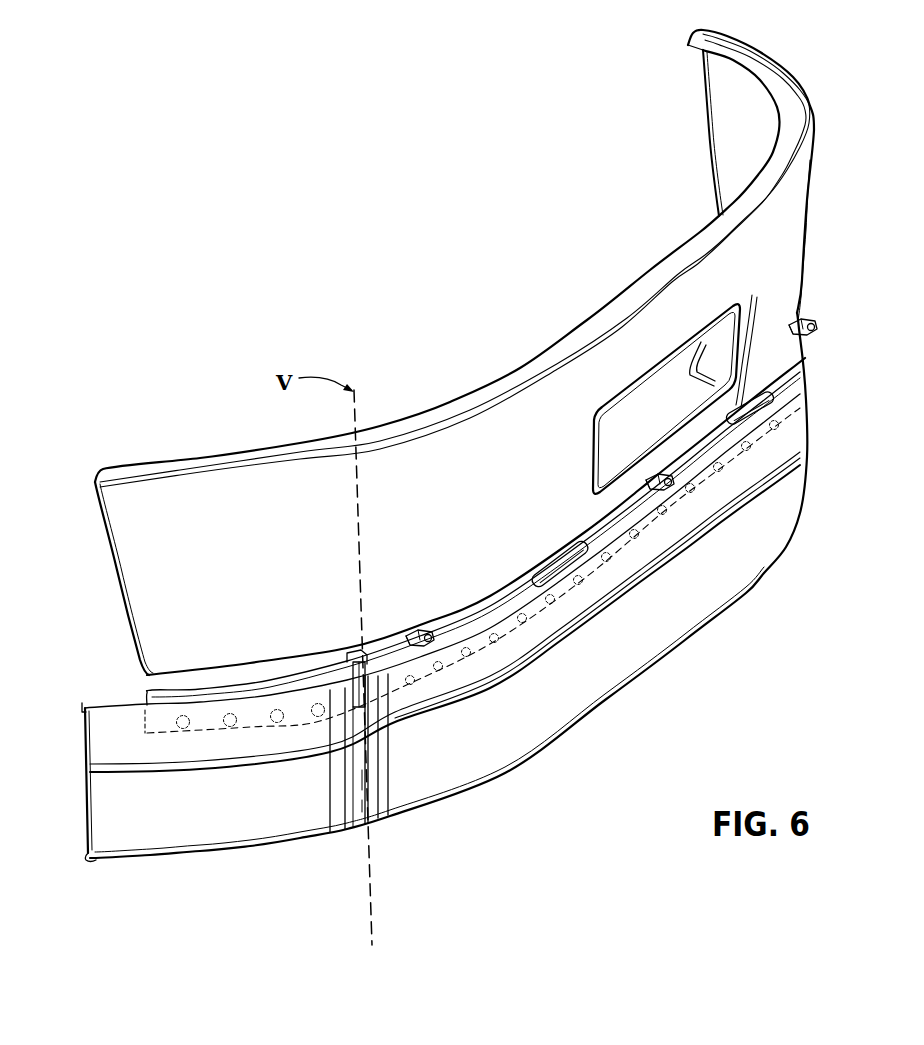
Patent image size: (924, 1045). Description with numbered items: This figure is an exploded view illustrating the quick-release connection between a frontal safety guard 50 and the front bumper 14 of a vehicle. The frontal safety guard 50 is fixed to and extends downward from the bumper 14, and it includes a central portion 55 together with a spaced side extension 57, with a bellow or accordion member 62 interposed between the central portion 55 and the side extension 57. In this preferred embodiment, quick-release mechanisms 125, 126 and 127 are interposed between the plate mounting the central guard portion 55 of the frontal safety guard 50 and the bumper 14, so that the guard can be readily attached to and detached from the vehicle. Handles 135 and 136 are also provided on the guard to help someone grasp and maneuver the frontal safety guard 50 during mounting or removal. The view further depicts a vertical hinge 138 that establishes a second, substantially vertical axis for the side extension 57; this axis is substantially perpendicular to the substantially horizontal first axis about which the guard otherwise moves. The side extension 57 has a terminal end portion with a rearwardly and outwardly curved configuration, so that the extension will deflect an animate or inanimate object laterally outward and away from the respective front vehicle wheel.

The front bumper 14 is at (516, 388).
The frontal safety guard 50 is at (548, 754).
The central portion 55 is at (670, 618).
The side extension 57 is at (268, 803).
The bellow member 62 is at (362, 781).
The quick-release mechanism 125 is at (448, 642).
The quick-release mechanism 126 is at (686, 482).
The quick-release mechanism 127 is at (820, 322).
The handle 135 is at (595, 563).
The handle 136 is at (786, 400).
The vertical hinge 138 is at (376, 698).